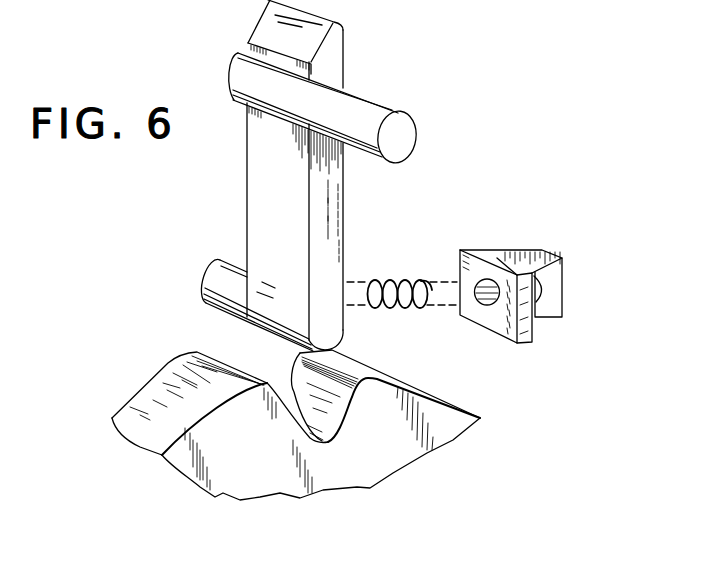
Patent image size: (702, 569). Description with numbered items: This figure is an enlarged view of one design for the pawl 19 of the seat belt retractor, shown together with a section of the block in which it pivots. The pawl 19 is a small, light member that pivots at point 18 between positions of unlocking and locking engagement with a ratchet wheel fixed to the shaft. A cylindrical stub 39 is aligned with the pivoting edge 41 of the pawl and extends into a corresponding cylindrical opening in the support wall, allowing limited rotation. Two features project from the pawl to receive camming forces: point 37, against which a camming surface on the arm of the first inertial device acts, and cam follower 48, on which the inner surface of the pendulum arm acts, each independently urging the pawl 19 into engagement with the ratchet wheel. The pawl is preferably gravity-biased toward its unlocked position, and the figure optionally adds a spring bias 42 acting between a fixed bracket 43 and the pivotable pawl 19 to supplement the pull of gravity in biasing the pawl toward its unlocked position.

The pivot point 18 is at (328, 442).
The pawl 19 is at (254, 158).
The point of the pawl 37 is at (237, 75).
The cylindrical stub 39 is at (213, 279).
The pivoting edge 41 is at (322, 334).
The spring bias 42 is at (393, 279).
The fixed bracket 43 is at (558, 277).
The cam follower 48 is at (363, 118).